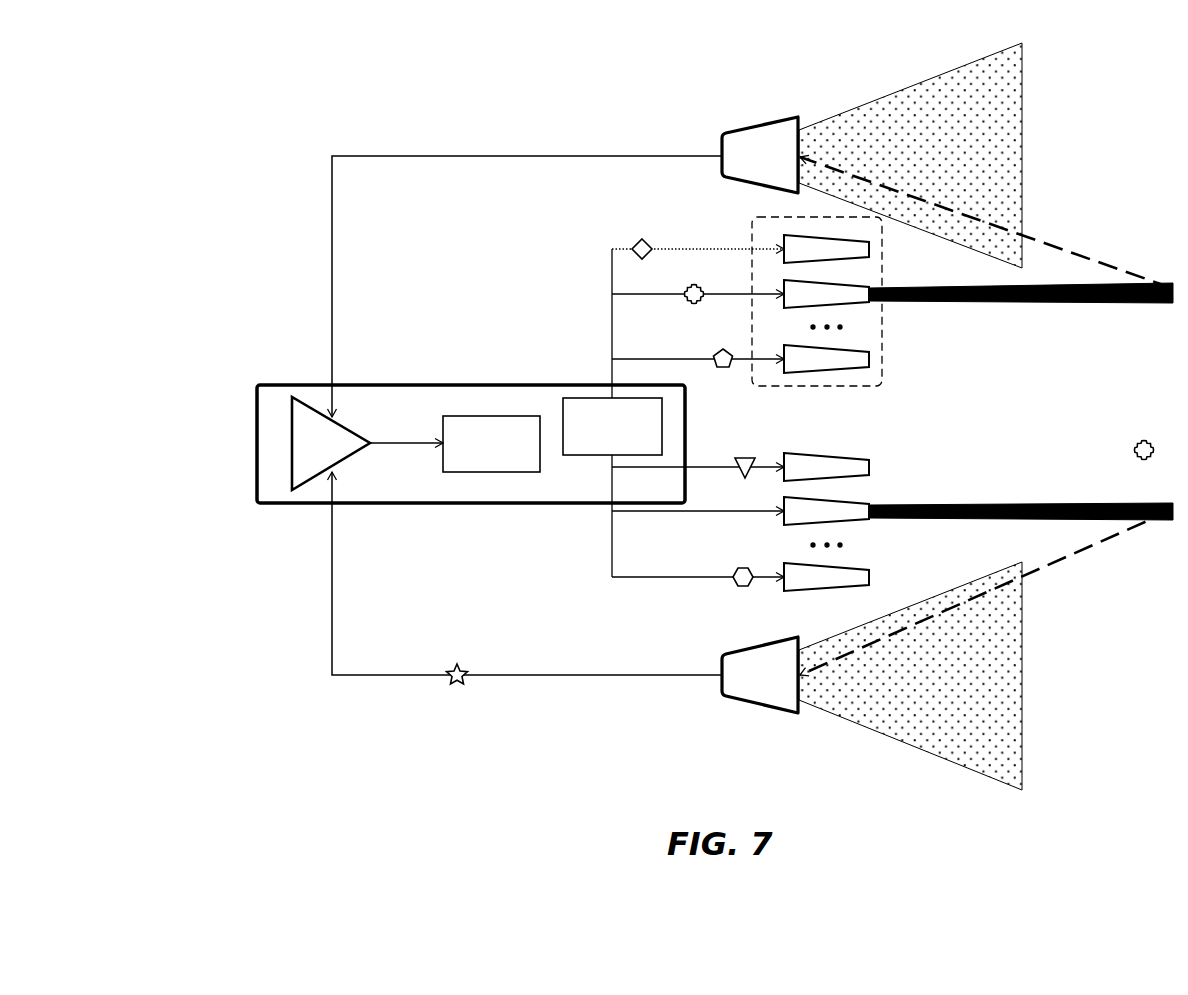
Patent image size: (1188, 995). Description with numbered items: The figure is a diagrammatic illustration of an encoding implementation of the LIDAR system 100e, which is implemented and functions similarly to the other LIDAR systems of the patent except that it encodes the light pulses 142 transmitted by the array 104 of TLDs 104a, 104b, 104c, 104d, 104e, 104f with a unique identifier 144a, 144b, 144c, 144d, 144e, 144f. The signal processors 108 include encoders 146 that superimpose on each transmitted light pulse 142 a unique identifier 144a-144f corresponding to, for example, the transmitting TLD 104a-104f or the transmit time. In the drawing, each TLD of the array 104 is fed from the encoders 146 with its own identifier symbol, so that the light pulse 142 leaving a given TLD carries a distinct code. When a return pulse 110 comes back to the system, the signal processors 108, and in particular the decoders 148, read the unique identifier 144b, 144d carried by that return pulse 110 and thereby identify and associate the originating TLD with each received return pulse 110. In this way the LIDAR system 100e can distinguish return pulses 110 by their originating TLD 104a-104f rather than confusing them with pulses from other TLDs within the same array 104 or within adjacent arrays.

The LIDAR system 100e is at (192, 153).
The return pulse 110 is at (571, 155).
The signal processors 108 is at (471, 426).
The decoders 148 is at (491, 444).
The encoders 146 is at (612, 426).
The array 104 is at (750, 229).
The TLD 104a is at (869, 250).
The TLD 104b is at (864, 303).
The TLD 104c is at (869, 359).
The TLD 104d is at (869, 467).
The TLD 104e is at (864, 521).
The TLD 104f is at (869, 576).
The unique identifier 144a is at (646, 241).
The unique identifier 144b is at (690, 286).
The unique identifier 144c is at (721, 350).
The unique identifier 144d is at (740, 477).
The unique identifier 144e is at (740, 520).
The unique identifier 144f is at (738, 588).
The light pulse 142 is at (1070, 304).